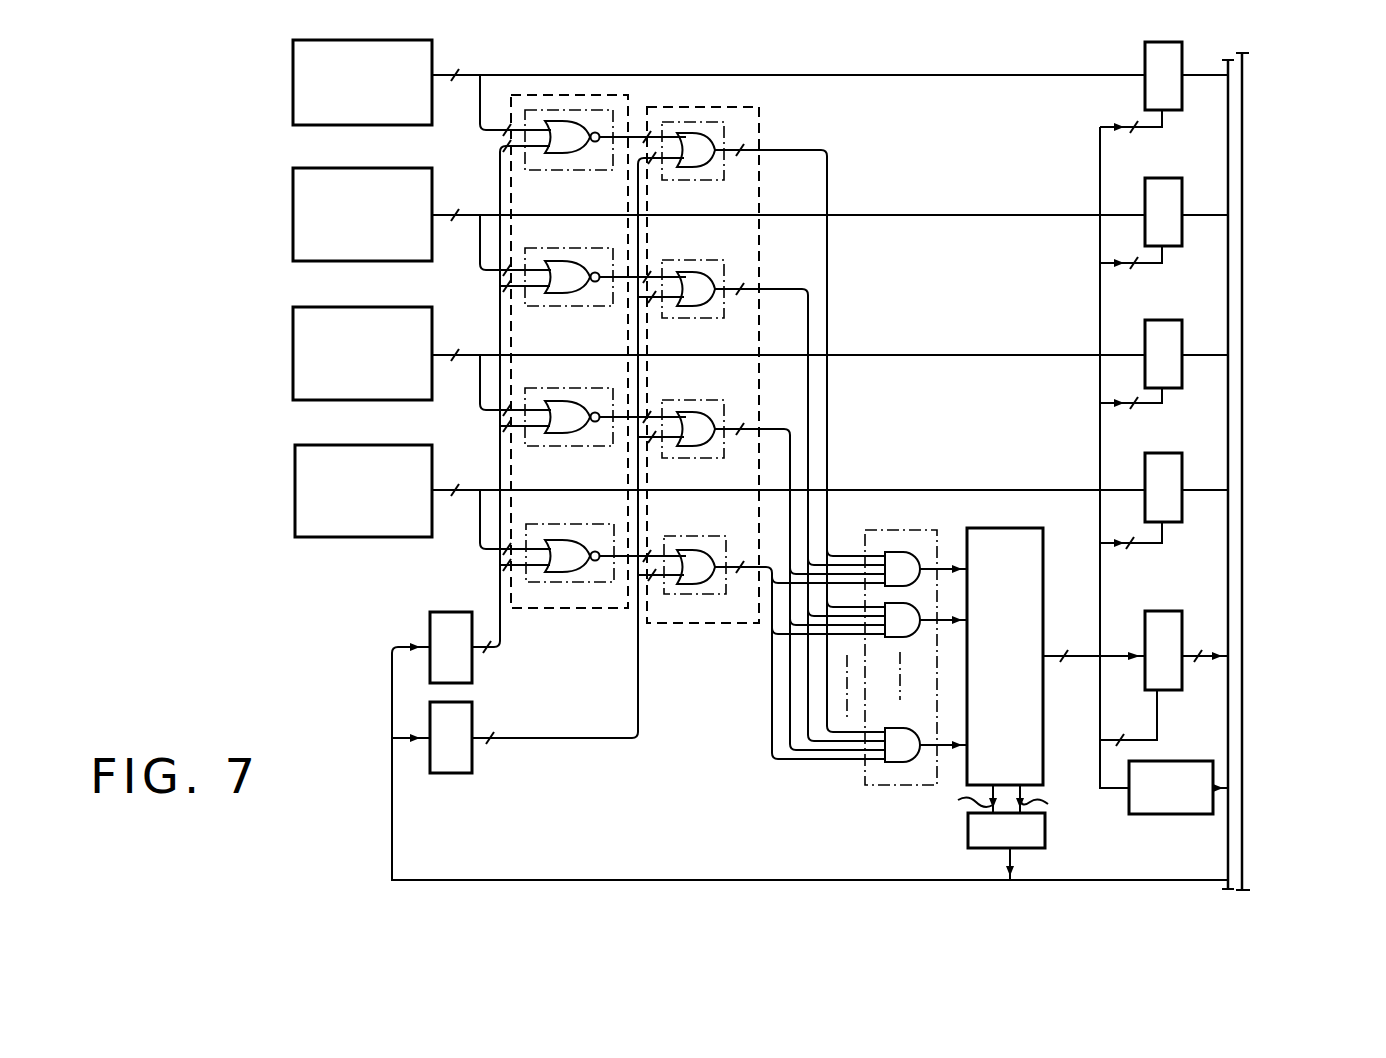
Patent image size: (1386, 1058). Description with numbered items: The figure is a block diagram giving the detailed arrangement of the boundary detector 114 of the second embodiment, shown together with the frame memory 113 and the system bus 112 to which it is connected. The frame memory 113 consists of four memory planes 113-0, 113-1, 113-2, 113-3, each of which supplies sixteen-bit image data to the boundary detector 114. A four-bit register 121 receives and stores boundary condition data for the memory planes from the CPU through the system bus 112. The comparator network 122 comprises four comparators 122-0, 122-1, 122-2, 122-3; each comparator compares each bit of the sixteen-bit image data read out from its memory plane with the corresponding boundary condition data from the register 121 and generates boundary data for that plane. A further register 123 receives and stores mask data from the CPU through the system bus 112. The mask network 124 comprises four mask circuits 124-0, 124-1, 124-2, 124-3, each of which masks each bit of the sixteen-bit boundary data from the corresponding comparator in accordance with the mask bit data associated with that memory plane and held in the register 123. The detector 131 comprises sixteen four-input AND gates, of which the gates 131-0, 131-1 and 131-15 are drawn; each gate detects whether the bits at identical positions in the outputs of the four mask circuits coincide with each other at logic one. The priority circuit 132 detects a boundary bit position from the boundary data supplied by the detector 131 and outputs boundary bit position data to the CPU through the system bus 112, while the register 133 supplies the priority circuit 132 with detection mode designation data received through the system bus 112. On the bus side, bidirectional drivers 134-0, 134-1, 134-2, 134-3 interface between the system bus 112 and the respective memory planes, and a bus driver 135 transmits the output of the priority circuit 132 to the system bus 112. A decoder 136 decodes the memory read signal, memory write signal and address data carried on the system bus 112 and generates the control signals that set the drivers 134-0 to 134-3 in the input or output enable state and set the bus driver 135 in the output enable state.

The system bus 112 is at (1243, 848).
The frame memory 113 is at (316, 545).
The memory plane 113-0 is at (293, 96).
The memory plane 113-1 is at (293, 209).
The memory plane 113-2 is at (293, 355).
The memory plane 113-3 is at (295, 485).
The boundary detector 114 is at (386, 770).
The 4-bit register 121 is at (430, 611).
The comparator network 122 is at (565, 608).
The comparator 122-0 is at (596, 110).
The comparator 122-1 is at (598, 255).
The comparator 122-2 is at (556, 398).
The comparator 122-3 is at (596, 532).
The register 123 is at (444, 774).
The mask network 124 is at (718, 623).
The mask circuit 124-0 is at (718, 122).
The mask circuit 124-1 is at (712, 262).
The mask circuit 124-2 is at (712, 400).
The mask circuit 124-3 is at (712, 536).
The detector 131 is at (920, 530).
The 4-input AND gate 131-0 is at (888, 553).
The 4-input AND gate 131-1 is at (905, 640).
The 4-input AND gate 131-15 is at (896, 760).
The priority circuit 132 is at (1000, 533).
The register 133 is at (1045, 832).
The bidirectional driver 134-0 is at (1170, 112).
The bidirectional driver 134-1 is at (1170, 248).
The bidirectional driver 134-2 is at (1170, 390).
The bidirectional driver 134-3 is at (1170, 524).
The bus driver 135 is at (1168, 692).
The decoder 136 is at (1147, 814).